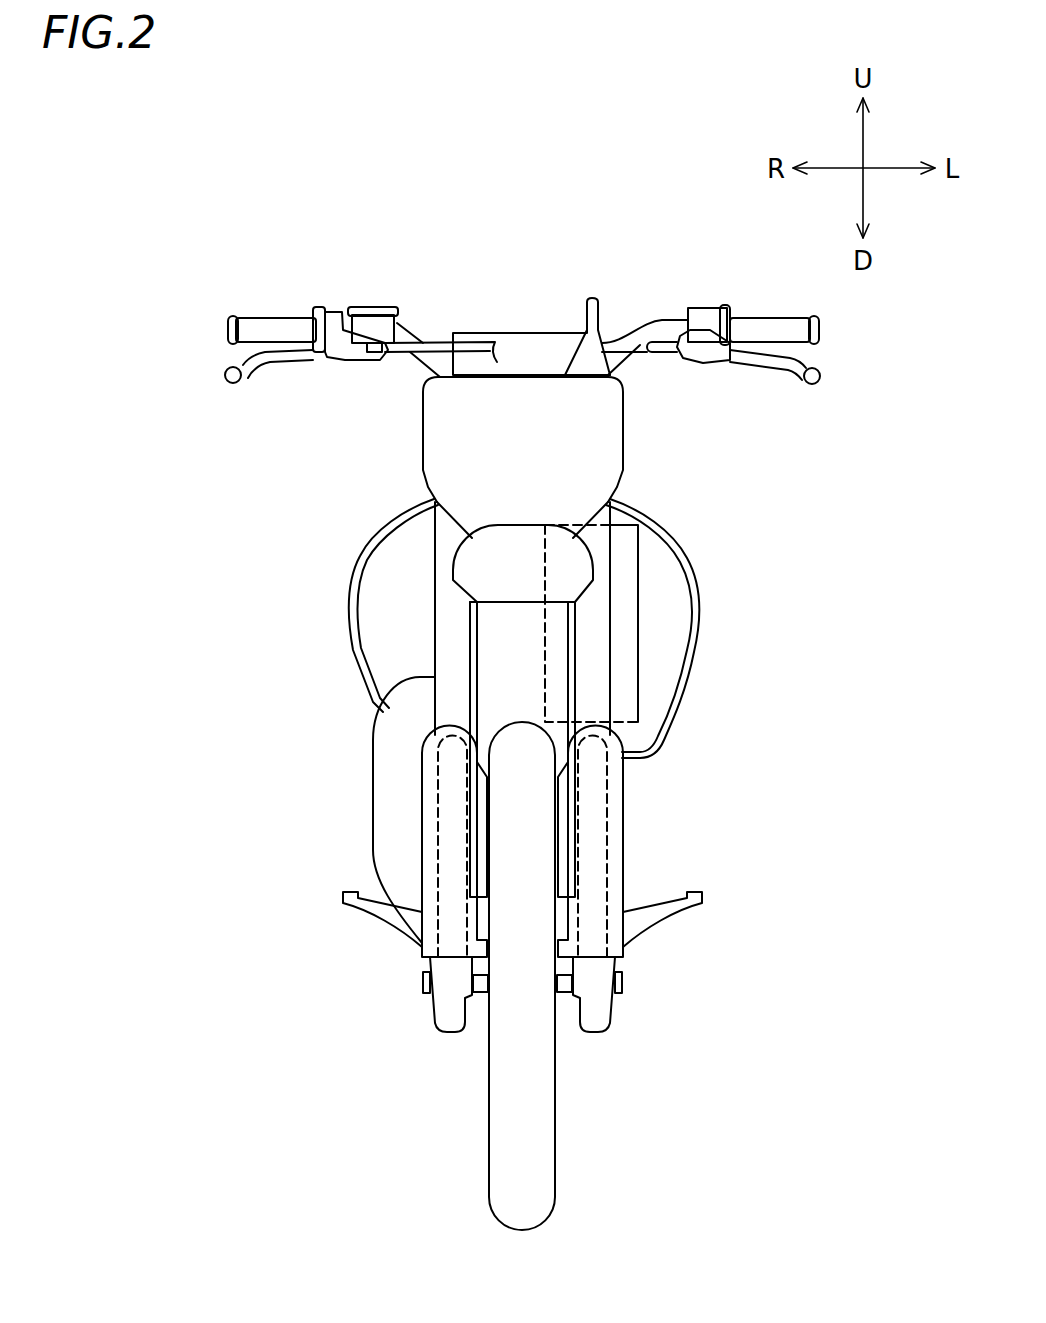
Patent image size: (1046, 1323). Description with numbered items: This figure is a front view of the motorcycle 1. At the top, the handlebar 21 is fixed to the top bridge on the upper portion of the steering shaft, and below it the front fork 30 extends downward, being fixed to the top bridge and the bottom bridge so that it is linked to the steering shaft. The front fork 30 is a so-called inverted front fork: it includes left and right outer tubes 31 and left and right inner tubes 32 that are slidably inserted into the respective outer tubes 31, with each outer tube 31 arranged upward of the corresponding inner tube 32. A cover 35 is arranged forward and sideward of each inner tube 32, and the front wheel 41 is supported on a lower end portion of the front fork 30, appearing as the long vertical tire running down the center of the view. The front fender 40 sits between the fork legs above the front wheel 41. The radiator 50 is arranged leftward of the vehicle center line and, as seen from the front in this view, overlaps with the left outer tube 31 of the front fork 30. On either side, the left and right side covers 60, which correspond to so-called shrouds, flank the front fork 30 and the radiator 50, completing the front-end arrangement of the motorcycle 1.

The motorcycle 1 is at (388, 196).
The handlebar 21 is at (665, 318).
The front fork 30 is at (435, 612).
The outer tube 31 is at (435, 643).
The inner tube 32 is at (438, 815).
The cover 35 is at (422, 858).
The front fender 40 is at (498, 538).
The front wheel 41 is at (556, 1103).
The radiator 50 is at (638, 558).
The side cover 60 is at (378, 532).